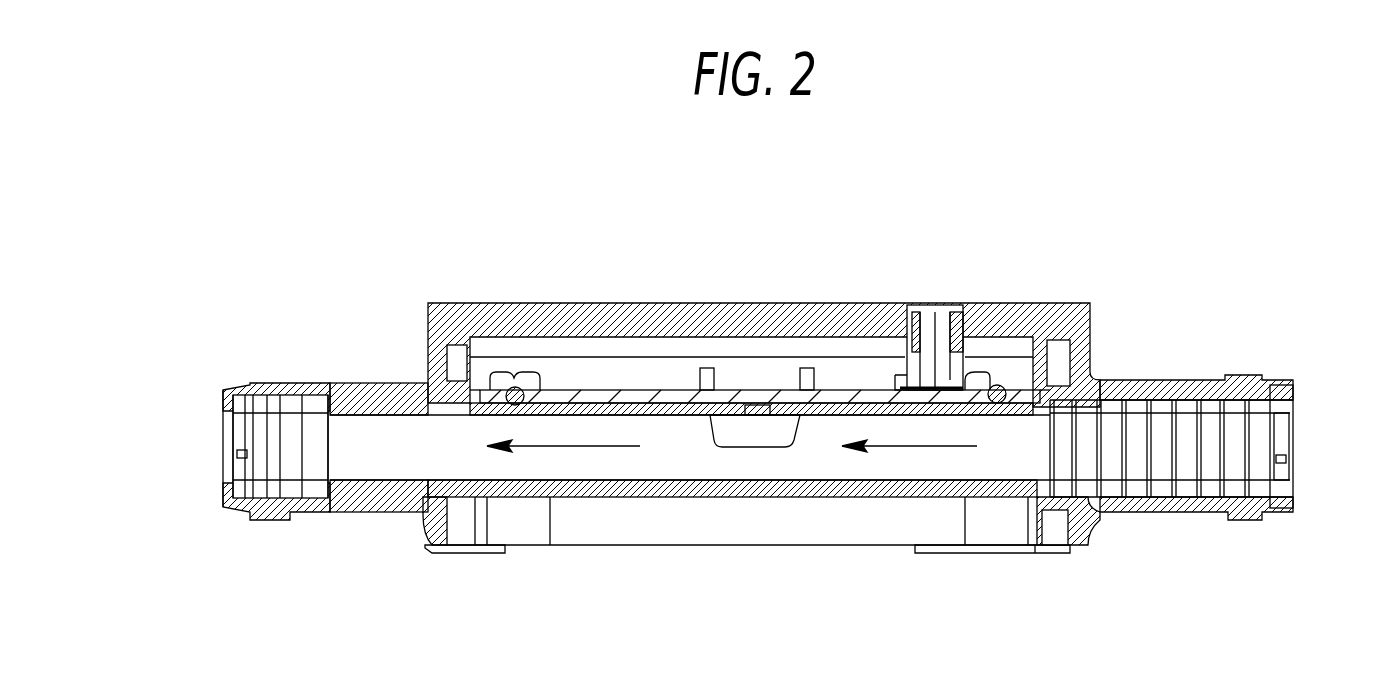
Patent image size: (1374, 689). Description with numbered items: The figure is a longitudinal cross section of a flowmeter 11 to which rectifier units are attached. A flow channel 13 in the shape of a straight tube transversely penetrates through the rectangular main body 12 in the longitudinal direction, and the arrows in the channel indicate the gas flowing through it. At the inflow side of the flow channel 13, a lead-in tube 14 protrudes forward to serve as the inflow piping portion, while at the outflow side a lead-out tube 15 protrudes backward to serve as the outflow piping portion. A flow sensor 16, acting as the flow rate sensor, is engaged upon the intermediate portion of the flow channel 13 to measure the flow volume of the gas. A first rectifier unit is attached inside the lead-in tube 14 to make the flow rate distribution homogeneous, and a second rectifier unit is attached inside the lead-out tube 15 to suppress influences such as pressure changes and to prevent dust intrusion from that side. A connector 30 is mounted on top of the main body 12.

The flowmeter 11 is at (877, 240).
The main body 12 is at (560, 302).
The flow channel 13 is at (383, 460).
The lead-in tube 14 is at (1180, 380).
The lead-out tube 15 is at (348, 385).
The flow sensor 16 is at (754, 398).
The connector 30 is at (925, 300).